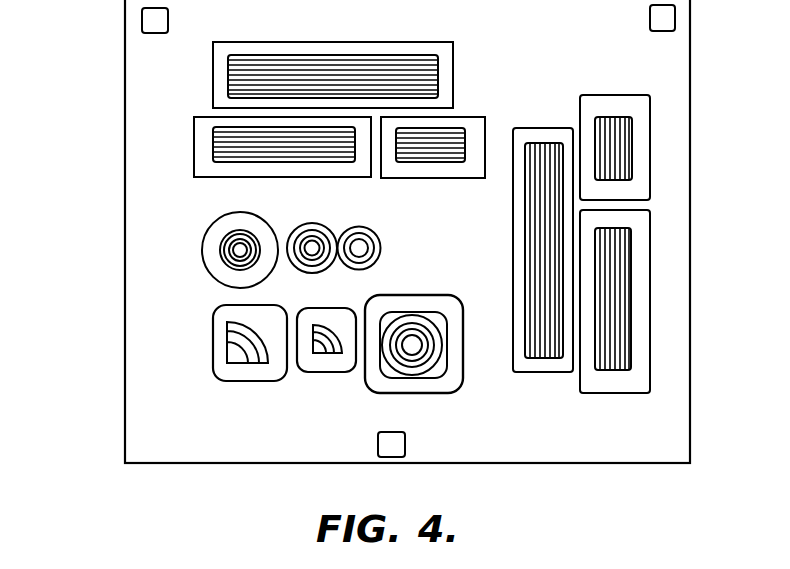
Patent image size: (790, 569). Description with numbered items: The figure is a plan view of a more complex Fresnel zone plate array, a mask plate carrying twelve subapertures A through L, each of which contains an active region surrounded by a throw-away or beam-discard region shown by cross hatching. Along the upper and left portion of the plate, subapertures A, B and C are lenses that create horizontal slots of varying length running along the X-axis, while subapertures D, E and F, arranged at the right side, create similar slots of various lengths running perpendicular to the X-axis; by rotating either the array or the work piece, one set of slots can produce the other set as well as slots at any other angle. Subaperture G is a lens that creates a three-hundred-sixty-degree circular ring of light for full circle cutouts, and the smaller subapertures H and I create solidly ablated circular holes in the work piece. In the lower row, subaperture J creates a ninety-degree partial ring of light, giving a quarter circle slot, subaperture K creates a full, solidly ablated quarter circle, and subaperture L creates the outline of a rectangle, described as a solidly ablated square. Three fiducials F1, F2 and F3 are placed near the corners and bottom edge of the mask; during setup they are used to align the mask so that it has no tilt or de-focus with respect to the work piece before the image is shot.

The subaperture A is at (333, 61).
The subaperture B is at (273, 147).
The subaperture C is at (433, 161).
The subaperture D is at (543, 237).
The subaperture E is at (615, 318).
The subaperture F is at (615, 132).
The subaperture G is at (240, 236).
The subaperture H is at (312, 233).
The subaperture I is at (359, 234).
The subaperture J is at (250, 358).
The subaperture K is at (326, 355).
The subaperture L is at (414, 359).
The fiducial F1 is at (675, 20).
The fiducial F2 is at (405, 450).
The fiducial F3 is at (142, 22).